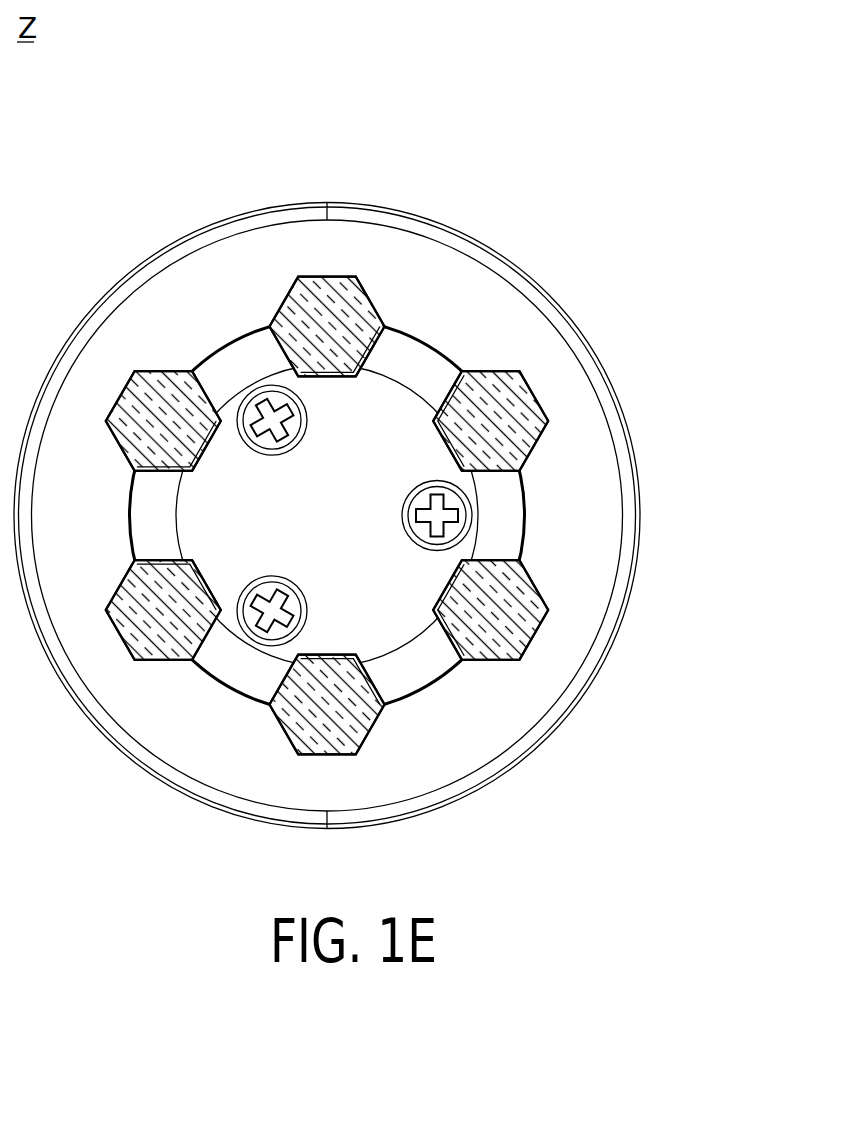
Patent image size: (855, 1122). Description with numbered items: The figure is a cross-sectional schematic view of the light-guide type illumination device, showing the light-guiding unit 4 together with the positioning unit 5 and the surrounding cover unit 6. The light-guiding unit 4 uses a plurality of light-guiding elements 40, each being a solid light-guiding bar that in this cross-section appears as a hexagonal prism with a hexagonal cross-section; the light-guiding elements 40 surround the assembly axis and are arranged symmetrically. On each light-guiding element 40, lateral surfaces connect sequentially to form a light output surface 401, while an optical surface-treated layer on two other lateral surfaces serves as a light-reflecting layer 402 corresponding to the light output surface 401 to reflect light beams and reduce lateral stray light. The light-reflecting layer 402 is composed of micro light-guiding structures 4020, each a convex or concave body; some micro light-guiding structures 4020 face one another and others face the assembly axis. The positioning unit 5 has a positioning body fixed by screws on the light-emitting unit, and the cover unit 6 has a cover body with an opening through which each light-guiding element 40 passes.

The light-guiding unit 4 is at (303, 146).
The light-guiding element 40 is at (284, 322).
The light output surface 401 is at (369, 303).
The light-reflecting layer 402 is at (465, 298).
The micro light-guiding structure 4020 is at (448, 449).
The positioning unit 5 is at (190, 496).
The cover unit 6 is at (520, 244).